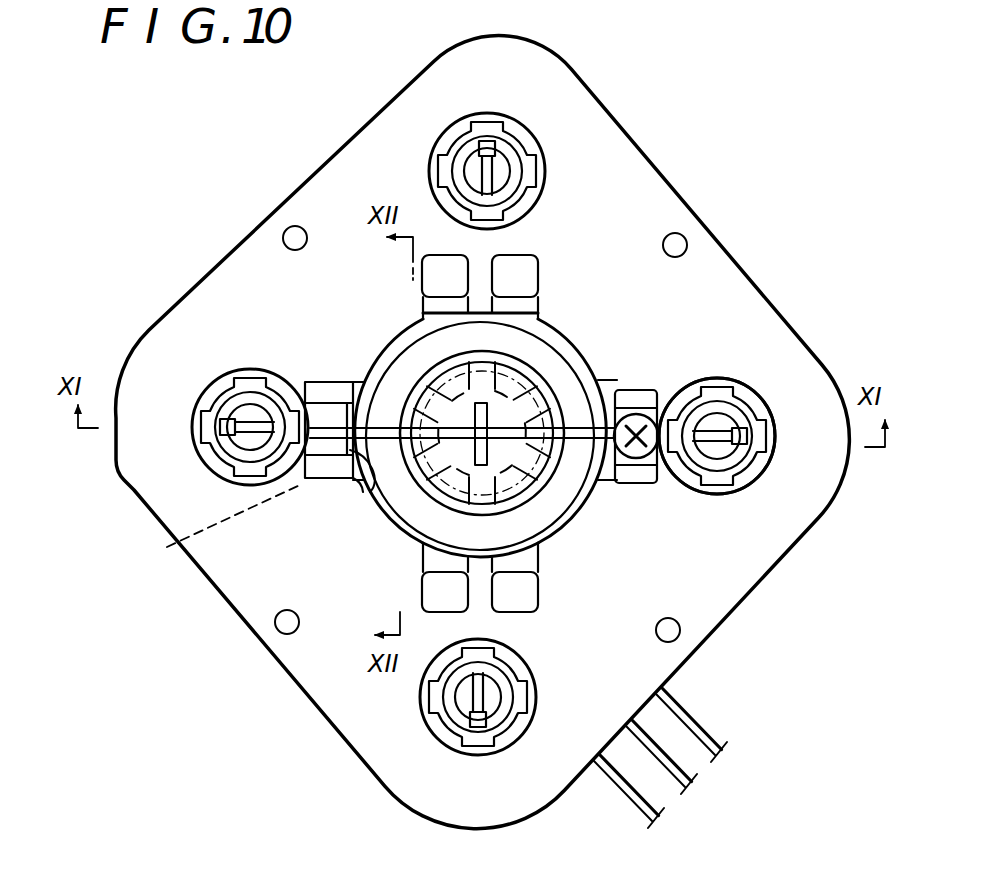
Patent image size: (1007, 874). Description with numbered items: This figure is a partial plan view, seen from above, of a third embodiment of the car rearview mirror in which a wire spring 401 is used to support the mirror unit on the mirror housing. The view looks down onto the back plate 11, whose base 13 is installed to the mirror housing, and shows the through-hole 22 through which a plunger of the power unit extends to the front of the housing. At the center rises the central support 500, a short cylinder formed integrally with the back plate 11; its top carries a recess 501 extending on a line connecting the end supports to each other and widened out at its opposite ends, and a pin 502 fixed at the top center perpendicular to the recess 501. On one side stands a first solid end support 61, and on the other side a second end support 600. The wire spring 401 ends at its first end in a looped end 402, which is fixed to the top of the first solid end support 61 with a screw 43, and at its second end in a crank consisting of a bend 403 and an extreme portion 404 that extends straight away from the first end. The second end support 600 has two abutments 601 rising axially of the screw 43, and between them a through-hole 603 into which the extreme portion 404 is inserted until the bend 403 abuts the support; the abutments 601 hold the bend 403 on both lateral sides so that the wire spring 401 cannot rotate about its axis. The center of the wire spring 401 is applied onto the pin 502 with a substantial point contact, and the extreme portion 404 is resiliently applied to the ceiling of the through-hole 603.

The back plate 11 is at (483, 432).
The base 13 is at (240, 243).
The through-hole 22 is at (507, 172).
The screw 43 is at (673, 490).
The first solid end support 61 is at (620, 460).
The wire spring 401 is at (577, 422).
The looped end 402 is at (628, 415).
The bend 403 is at (352, 478).
The extreme portion 404 is at (162, 526).
The central support 500 is at (458, 376).
The recess 501 is at (465, 437).
The pin 502 is at (488, 406).
The second end support 600 is at (303, 382).
The abutments 601 is at (366, 480).
The through-hole 603 is at (233, 516).